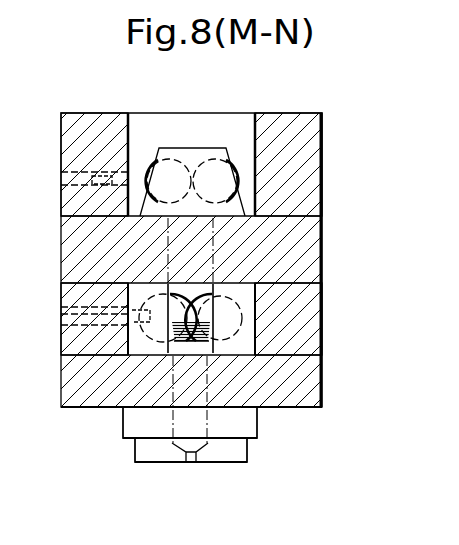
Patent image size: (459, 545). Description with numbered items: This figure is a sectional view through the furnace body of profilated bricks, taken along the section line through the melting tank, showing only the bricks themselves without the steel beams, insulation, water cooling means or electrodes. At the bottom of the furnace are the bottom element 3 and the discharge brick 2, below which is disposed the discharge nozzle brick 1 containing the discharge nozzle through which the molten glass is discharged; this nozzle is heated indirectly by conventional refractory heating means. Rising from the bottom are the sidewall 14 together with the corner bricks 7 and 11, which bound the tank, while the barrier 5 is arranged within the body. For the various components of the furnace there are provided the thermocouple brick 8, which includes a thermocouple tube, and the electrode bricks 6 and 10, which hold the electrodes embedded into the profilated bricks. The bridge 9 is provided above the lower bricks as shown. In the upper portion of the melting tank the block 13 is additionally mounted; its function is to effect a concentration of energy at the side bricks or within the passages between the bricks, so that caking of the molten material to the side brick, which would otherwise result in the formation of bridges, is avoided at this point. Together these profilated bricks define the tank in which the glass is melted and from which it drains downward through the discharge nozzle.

The discharge nozzle brick 1 is at (247, 455).
The discharge brick 2 is at (254, 428).
The bottom element 3 is at (303, 388).
The barrier 5 is at (183, 345).
The electrode brick 6 is at (184, 289).
The corner brick 7 is at (78, 303).
The thermocouple brick 8 is at (130, 340).
The bridge 9 is at (78, 233).
The electrode brick 10 is at (199, 124).
The corner brick 11 is at (88, 122).
The block 13 is at (192, 162).
The sidewall 14 is at (238, 326).